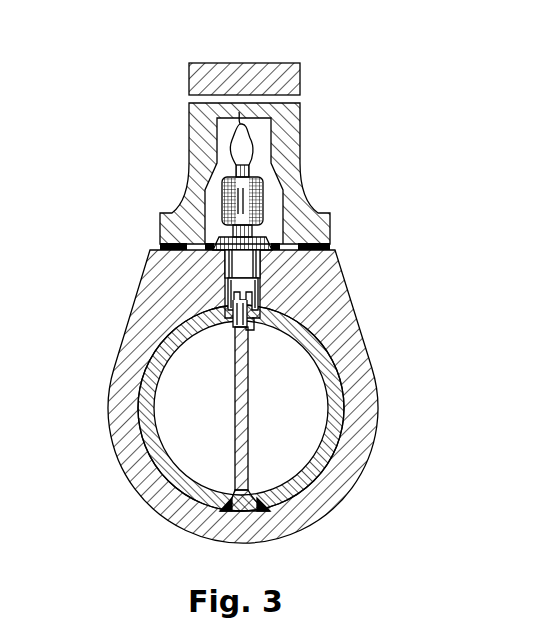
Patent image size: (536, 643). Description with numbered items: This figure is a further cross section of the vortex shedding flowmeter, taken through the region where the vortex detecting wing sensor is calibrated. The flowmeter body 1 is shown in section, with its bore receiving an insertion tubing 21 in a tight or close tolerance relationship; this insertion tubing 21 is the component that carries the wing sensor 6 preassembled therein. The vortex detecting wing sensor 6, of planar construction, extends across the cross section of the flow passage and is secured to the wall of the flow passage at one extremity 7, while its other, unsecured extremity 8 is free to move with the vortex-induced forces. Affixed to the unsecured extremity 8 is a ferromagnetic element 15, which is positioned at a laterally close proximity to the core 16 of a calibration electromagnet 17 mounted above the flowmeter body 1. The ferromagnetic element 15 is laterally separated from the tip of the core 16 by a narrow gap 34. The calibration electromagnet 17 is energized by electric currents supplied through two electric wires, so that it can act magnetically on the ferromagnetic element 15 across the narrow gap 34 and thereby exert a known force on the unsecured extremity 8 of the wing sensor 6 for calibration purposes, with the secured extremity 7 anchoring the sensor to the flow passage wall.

The flowmeter body 1 is at (358, 323).
The vortex detecting wing sensor 6 is at (237, 403).
The secured extremity of the wing sensor 7 is at (233, 482).
The unsecured extremity of the wing sensor 8 is at (250, 338).
The ferromagnetic element 15 is at (232, 340).
The core of the calibration electromagnet 16 is at (262, 300).
The calibration electromagnet 17 is at (261, 202).
The insertion tubing 21 is at (318, 466).
The narrow gap 34 is at (227, 302).